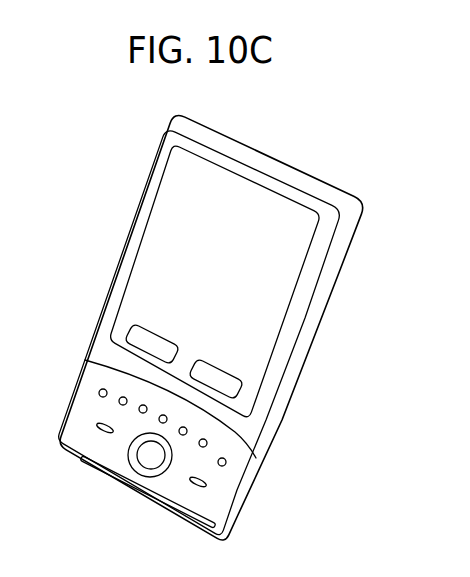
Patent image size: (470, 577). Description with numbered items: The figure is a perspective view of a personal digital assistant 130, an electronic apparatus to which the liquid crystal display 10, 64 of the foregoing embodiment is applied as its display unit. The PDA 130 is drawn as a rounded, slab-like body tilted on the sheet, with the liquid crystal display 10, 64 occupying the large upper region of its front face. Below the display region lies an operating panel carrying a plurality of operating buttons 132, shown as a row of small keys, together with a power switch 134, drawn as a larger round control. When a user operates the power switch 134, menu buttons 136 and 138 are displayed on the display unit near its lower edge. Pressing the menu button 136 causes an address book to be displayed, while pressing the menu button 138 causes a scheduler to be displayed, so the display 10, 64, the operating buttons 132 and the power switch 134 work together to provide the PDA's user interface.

The personal digital assistant 130 is at (95, 210).
The liquid crystal display 10 is at (270, 281).
The liquid crystal display 64 is at (297, 225).
The menu button 136 is at (140, 338).
The menu button 138 is at (224, 378).
The operating buttons 132 is at (207, 443).
The power switch 134 is at (142, 467).